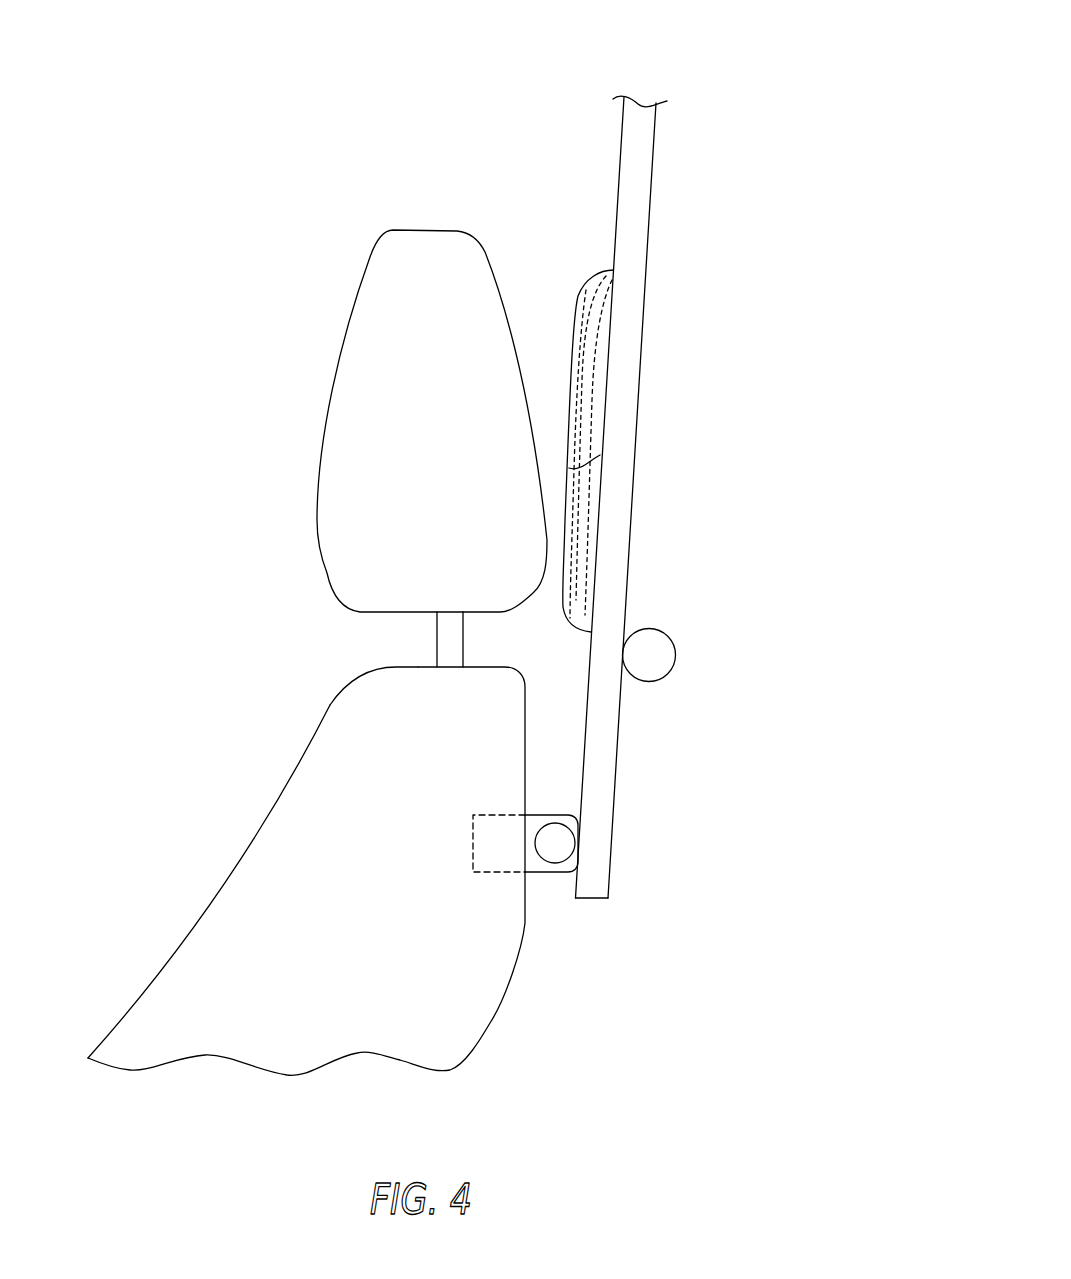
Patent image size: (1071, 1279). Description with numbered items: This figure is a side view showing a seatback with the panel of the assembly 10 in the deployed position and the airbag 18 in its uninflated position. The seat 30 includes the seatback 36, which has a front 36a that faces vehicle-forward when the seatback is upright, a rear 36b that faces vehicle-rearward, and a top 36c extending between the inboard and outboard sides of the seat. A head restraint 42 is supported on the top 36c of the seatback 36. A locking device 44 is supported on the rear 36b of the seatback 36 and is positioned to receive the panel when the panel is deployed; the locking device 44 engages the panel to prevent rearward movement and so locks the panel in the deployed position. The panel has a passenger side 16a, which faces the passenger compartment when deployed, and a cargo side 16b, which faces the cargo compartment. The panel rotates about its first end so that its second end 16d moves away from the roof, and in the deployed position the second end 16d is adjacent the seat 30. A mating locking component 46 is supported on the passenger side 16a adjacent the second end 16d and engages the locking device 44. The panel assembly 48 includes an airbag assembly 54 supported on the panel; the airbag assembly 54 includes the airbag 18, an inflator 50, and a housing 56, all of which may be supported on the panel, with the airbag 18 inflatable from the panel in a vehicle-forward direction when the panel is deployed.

The assembly 10 is at (651, 63).
The passenger side 16a is at (586, 720).
The cargo side 16b is at (618, 753).
The second end 16d is at (598, 899).
The airbag 18 is at (607, 395).
The seat 30 is at (191, 266).
The seatback 36 is at (335, 851).
The front 36a is at (232, 870).
The rear 36b is at (488, 1023).
The top 36c is at (418, 667).
The head restraint 42 is at (427, 229).
The locking device 44 is at (543, 873).
The mating locking component 46 is at (548, 828).
The panel assembly 48 is at (740, 222).
The inflator 50 is at (660, 679).
The airbag assembly 54 is at (732, 338).
The housing 56 is at (569, 468).